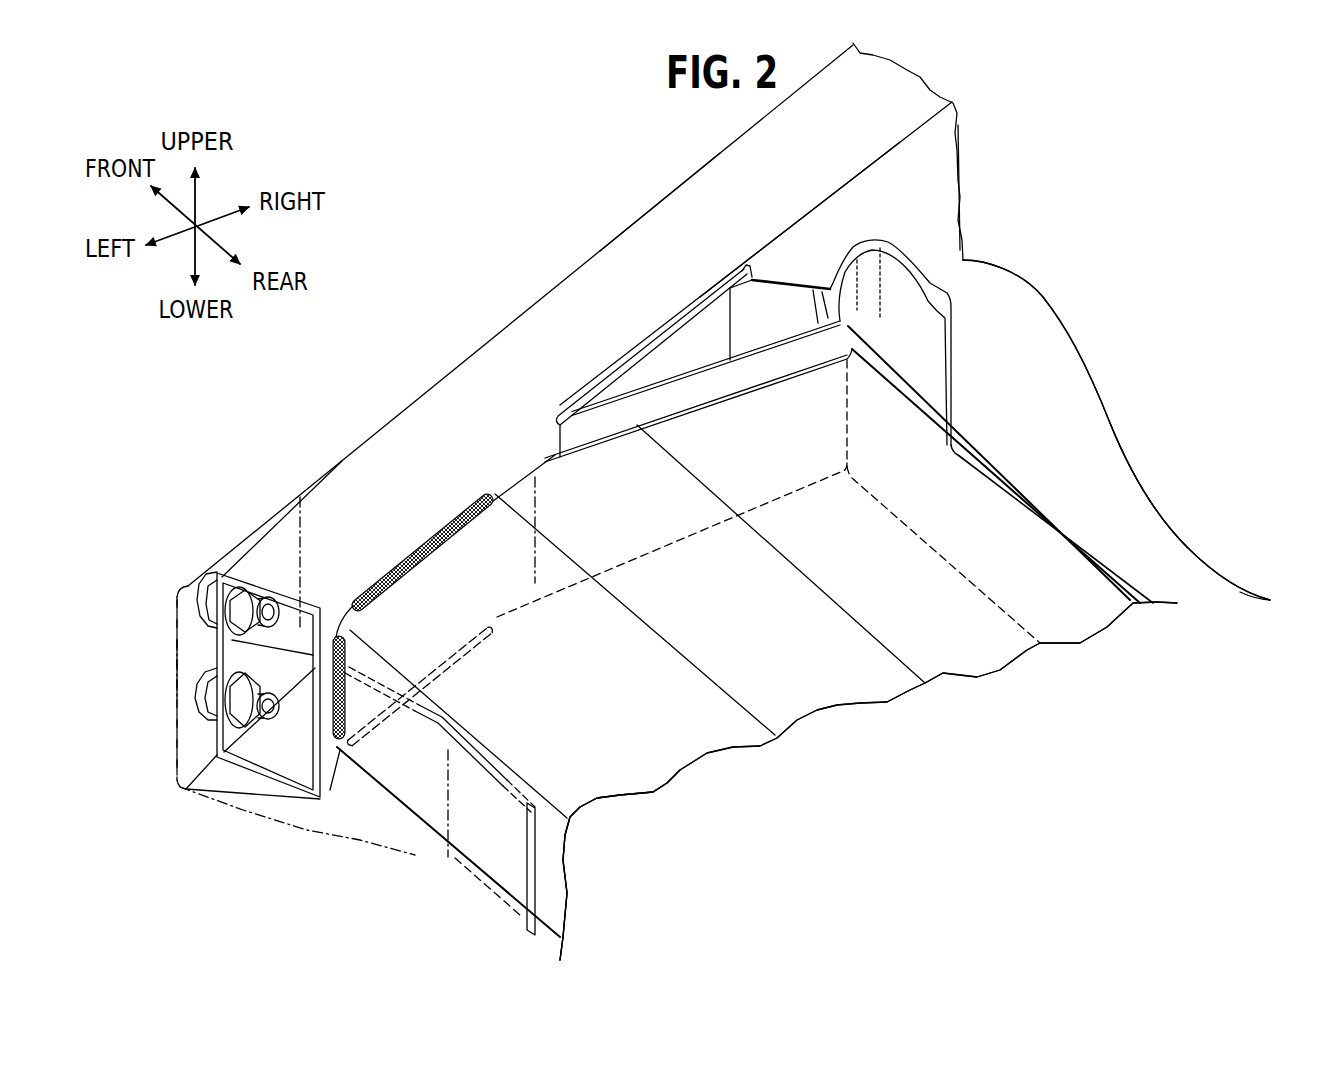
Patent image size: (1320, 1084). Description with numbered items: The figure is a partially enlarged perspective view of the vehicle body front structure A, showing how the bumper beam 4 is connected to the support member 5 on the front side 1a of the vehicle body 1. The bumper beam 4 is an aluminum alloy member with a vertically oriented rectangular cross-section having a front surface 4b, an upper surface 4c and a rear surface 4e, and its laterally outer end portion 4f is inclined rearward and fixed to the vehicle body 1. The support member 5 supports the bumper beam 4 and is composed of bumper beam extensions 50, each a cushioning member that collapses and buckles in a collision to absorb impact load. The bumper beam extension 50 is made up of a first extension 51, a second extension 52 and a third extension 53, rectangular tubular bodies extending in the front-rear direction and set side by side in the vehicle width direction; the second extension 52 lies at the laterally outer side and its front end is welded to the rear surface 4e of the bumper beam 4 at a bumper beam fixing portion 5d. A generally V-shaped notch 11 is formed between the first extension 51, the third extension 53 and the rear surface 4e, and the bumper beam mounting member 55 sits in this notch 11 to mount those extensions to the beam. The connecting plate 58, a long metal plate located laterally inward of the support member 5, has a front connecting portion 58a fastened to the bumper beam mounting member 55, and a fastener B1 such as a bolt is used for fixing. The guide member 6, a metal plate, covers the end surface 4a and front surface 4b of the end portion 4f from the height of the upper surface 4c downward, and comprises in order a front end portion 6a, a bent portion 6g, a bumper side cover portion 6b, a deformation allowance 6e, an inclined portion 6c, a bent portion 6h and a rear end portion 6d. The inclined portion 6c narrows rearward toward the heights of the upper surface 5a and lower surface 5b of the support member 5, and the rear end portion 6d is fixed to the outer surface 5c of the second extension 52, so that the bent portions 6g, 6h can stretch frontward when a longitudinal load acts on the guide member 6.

The vehicle body 1 is at (1017, 463).
The front side of vehicle body 1a is at (1116, 430).
The vehicle body front structure A is at (1112, 218).
The bumper beam 4 is at (527, 297).
The end surface of bumper beam 4a is at (215, 636).
The front surface of bumper beam 4b is at (653, 207).
The upper surface of bumper beam 4c is at (737, 193).
The rear surface of bumper beam 4e is at (896, 197).
The laterally outer end portion of bumper beam 4f is at (267, 570).
The notch 11 is at (700, 337).
The support member 5 is at (770, 830).
The bumper beam extension 50 is at (868, 781).
The upper surface of support member 5a is at (627, 762).
The lower surface of support member 5b is at (527, 907).
The outer surface of support member 5c is at (552, 865).
The bumper beam fixing portion 5d is at (428, 553).
The first extension 51 is at (967, 627).
The second extension 52 is at (683, 723).
The third extension 53 is at (810, 673).
The bumper beam mounting member 55 is at (1270, 600).
The connecting plate 58 is at (1107, 557).
The front connecting portion 58a is at (948, 297).
The guide member 6 is at (277, 800).
The front end portion of guide member 6a is at (243, 560).
The bumper side cover portion 6b is at (227, 805).
The inclined portion 6c is at (350, 838).
The rear end portion of guide member 6d is at (475, 877).
The deformation allowance 6e is at (207, 727).
The bent portion 6g is at (173, 668).
The bent portion 6h is at (447, 785).
The fastener B1 is at (203, 590).